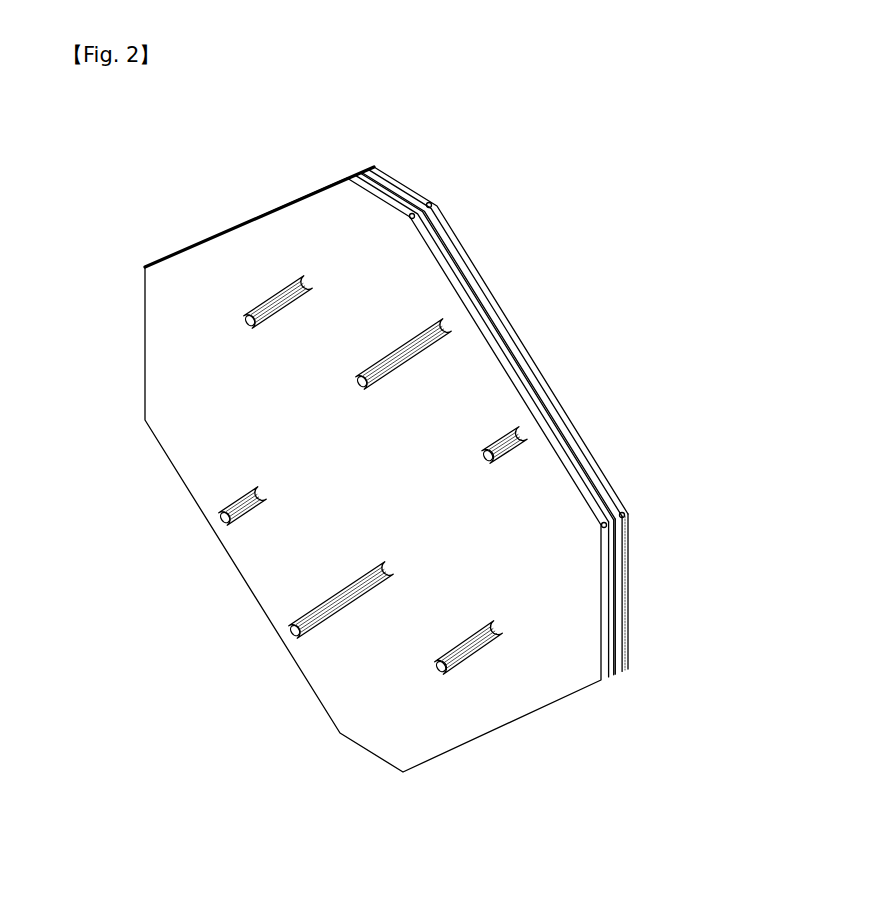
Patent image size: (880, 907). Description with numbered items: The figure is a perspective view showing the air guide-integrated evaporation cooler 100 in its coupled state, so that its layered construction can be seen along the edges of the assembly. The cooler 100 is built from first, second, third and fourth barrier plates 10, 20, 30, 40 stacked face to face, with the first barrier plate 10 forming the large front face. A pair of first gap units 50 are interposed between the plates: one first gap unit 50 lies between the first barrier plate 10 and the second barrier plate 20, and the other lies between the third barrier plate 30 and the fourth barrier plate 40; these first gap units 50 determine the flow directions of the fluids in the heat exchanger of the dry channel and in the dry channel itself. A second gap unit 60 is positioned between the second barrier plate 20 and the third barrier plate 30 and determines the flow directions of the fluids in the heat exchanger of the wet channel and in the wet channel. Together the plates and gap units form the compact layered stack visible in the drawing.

The air guide-integrated evaporation cooler 100 is at (433, 449).
The first barrier plate 10 is at (513, 702).
The second barrier plate 20 is at (520, 390).
The third barrier plate 30 is at (502, 322).
The fourth barrier plate 40 is at (475, 273).
The first gap unit 50 is at (623, 540).
The second gap unit 60 is at (615, 583).